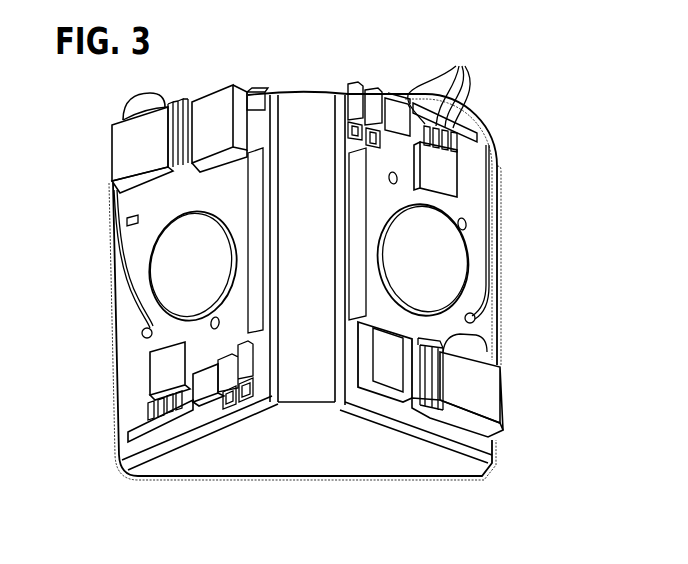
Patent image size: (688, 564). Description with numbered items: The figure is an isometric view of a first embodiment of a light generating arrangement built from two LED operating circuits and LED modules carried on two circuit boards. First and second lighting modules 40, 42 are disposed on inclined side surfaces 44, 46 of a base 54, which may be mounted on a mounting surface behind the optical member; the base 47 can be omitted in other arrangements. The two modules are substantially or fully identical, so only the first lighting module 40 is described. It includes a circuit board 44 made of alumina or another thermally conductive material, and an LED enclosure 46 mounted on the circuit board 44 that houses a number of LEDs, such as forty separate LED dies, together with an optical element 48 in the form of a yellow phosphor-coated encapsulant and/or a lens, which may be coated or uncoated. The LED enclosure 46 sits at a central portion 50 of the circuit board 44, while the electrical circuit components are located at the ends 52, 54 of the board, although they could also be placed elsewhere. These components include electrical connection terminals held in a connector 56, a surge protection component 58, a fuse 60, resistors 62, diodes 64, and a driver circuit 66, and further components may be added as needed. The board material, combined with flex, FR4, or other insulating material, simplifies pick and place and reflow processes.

The first lighting module 40 is at (120, 215).
The second lighting module 42 is at (433, 323).
The circuit board 44 is at (140, 238).
The LED enclosure 46 is at (188, 252).
The base 47 is at (320, 105).
The optical element 48 is at (163, 282).
The central portion of the circuit board 50 is at (253, 249).
The end of the circuit board 52 is at (250, 113).
The base 54 is at (258, 377).
The connector 56 is at (133, 142).
The surge protection component 58 is at (207, 106).
The fuse 60 is at (420, 344).
The resistors 62 is at (439, 86).
The diodes 64 is at (207, 404).
The driver circuit 66 is at (448, 174).